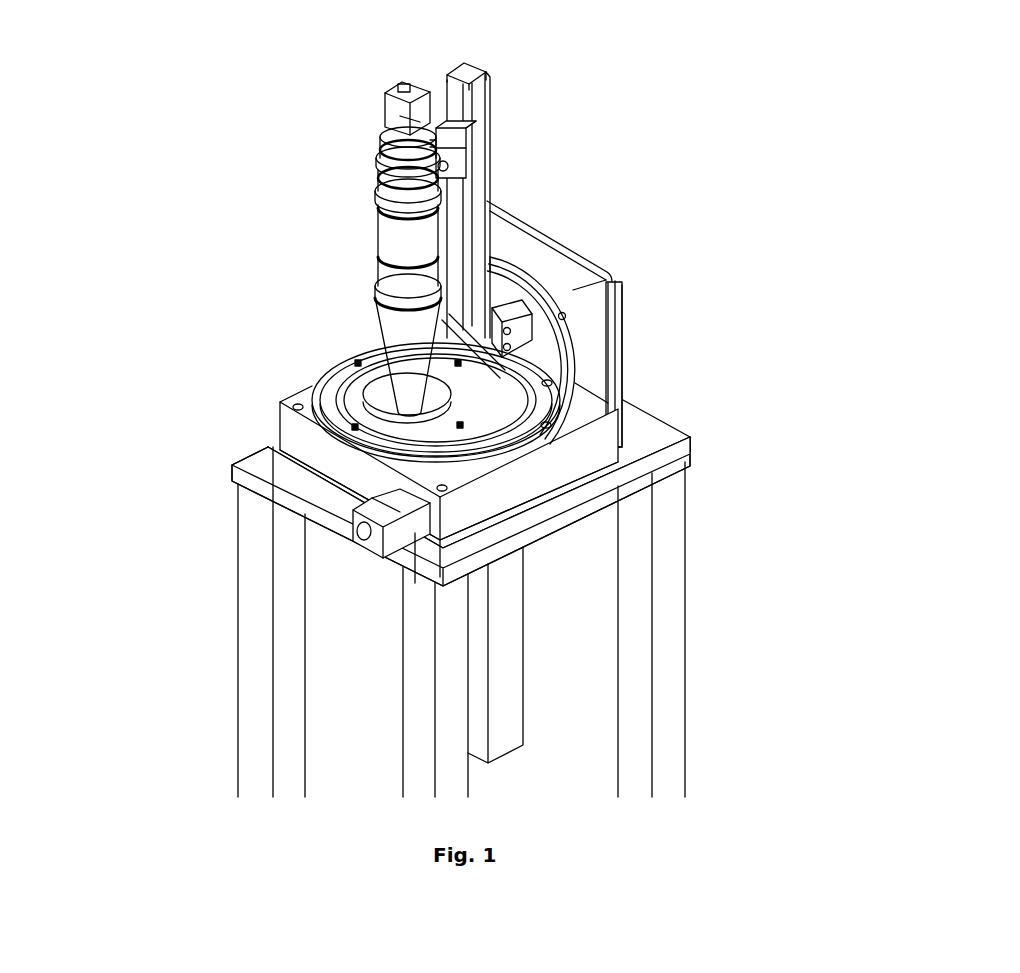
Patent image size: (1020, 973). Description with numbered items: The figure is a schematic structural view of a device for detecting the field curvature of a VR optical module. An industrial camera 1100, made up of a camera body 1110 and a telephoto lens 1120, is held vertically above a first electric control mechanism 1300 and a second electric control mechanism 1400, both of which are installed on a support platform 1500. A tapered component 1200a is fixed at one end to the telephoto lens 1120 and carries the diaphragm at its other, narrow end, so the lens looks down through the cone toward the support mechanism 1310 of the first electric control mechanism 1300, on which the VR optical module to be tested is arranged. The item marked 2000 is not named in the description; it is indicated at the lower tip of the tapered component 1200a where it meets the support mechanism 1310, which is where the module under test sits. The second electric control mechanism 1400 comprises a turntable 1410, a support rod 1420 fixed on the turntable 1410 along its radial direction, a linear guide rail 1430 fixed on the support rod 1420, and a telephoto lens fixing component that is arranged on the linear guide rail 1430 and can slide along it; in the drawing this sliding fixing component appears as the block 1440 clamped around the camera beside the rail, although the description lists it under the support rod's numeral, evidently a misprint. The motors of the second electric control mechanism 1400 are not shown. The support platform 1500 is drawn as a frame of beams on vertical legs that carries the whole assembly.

The industrial camera 1100 is at (235, 222).
The camera body 1110 is at (400, 112).
The telephoto lens 1120 is at (400, 274).
The tapered component 1200a is at (400, 360).
The workpiece 2000 is at (398, 412).
The first electric control mechanism 1300 is at (473, 468).
The support mechanism 1310 is at (472, 406).
The second electric control mechanism 1400 is at (662, 226).
The turntable 1410 is at (545, 329).
The support rod 1420 is at (473, 213).
The linear guide rail 1430 is at (490, 79).
The slider 1440 is at (438, 133).
The support platform 1500 is at (462, 577).